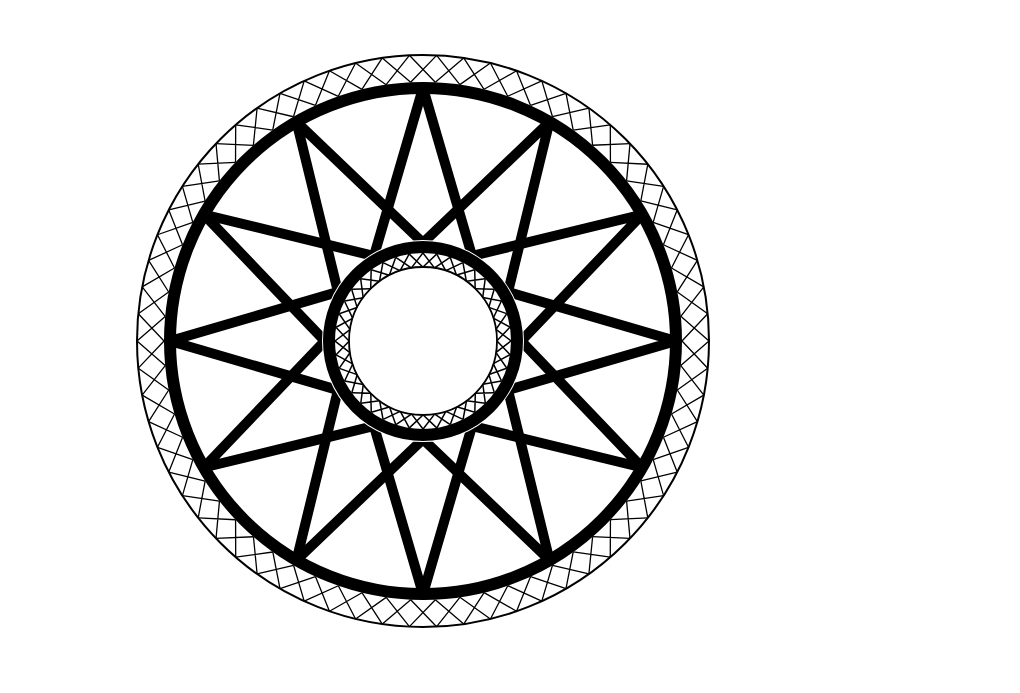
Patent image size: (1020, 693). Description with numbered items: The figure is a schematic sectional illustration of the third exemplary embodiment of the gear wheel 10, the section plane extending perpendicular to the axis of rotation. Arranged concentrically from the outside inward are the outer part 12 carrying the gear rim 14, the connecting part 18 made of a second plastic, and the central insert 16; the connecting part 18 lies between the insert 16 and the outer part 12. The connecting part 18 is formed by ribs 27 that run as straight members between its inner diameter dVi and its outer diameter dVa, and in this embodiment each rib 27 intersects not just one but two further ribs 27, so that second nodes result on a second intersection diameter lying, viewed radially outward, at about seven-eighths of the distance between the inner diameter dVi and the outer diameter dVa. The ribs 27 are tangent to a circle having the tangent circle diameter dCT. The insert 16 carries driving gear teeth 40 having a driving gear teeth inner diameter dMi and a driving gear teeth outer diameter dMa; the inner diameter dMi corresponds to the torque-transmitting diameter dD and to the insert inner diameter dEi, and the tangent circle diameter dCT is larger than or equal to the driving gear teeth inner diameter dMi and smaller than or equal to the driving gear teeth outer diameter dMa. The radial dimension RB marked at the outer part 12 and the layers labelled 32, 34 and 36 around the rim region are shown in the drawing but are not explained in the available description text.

The gear wheel 10 is at (193, 92).
The outer part 12 is at (442, 344).
The gear rim 14 is at (657, 205).
The insert 16 is at (519, 368).
The connecting part 18 is at (498, 341).
The rib 27 is at (610, 317).
The inner rim ring 32 is at (630, 500).
The intermediate rim layer 34 is at (460, 363).
The outer rim layer 36 is at (668, 425).
The driving gear teeth 40 is at (418, 420).
The rim band width RB is at (284, 20).
The outer diameter of the connecting part dVa is at (185, 227).
The inner diameter of the connecting part dVi is at (365, 392).
The driving gear teeth outer diameter dMa is at (370, 287).
The torque-transmitting diameter dD is at (252, 499).
The insert inner diameter dEi is at (252, 499).
The driving gear teeth inner diameter dMi is at (398, 395).
The tangent circle diameter dCT is at (483, 437).